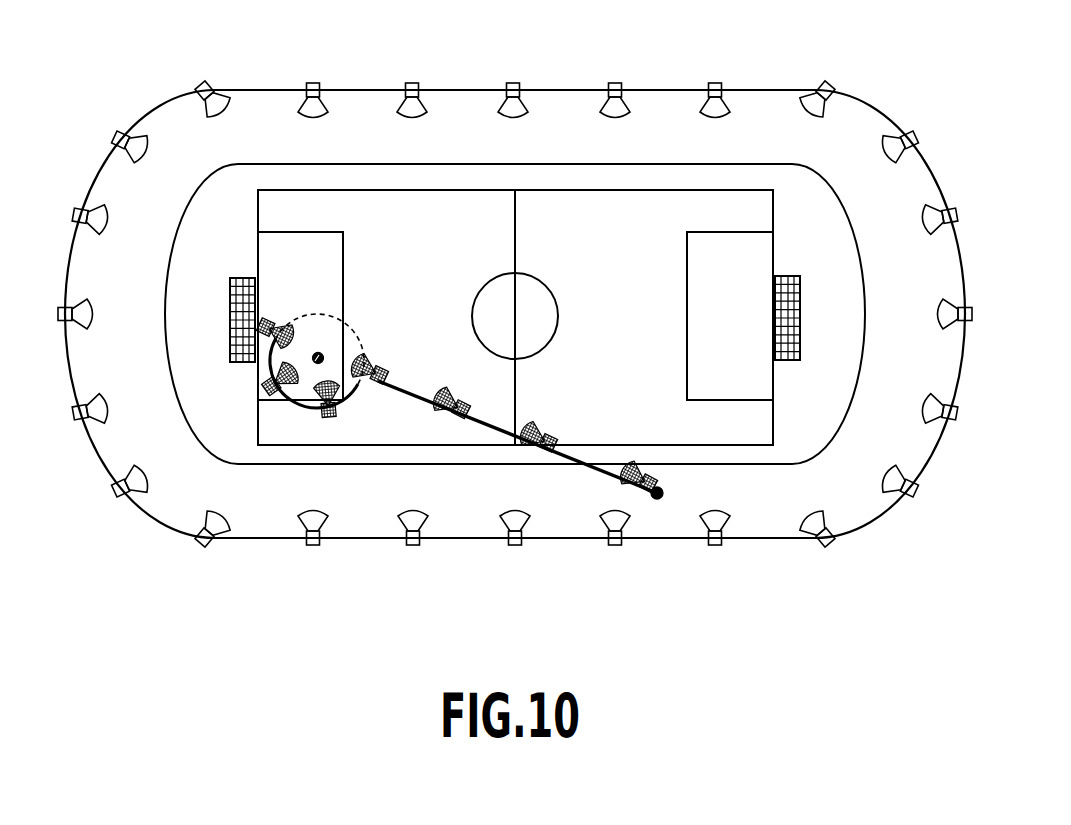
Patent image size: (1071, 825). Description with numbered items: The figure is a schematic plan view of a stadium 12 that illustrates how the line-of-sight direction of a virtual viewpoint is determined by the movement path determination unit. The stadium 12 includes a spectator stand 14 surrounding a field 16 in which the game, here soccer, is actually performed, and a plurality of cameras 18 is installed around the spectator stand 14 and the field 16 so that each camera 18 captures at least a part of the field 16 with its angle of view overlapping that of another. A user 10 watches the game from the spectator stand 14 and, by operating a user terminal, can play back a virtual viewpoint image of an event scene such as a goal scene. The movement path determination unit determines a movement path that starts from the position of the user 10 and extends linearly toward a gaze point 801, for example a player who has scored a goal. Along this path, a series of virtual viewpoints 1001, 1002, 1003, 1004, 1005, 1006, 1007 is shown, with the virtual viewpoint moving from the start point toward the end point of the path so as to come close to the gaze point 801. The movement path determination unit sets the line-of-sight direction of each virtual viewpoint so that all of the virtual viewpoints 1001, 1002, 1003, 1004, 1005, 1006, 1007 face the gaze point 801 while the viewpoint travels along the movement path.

The user 10 is at (657, 499).
The stadium 12 is at (653, 90).
The spectator stand 14 is at (755, 115).
The field 16 is at (570, 262).
The camera 18 is at (416, 547).
The gaze point 801 is at (318, 352).
The virtual viewpoint 1001 is at (632, 468).
The virtual viewpoint 1002 is at (548, 437).
The virtual viewpoint 1003 is at (440, 395).
The virtual viewpoint 1004 is at (377, 370).
The virtual viewpoint 1005 is at (332, 407).
The virtual viewpoint 1006 is at (270, 388).
The virtual viewpoint 1007 is at (280, 335).